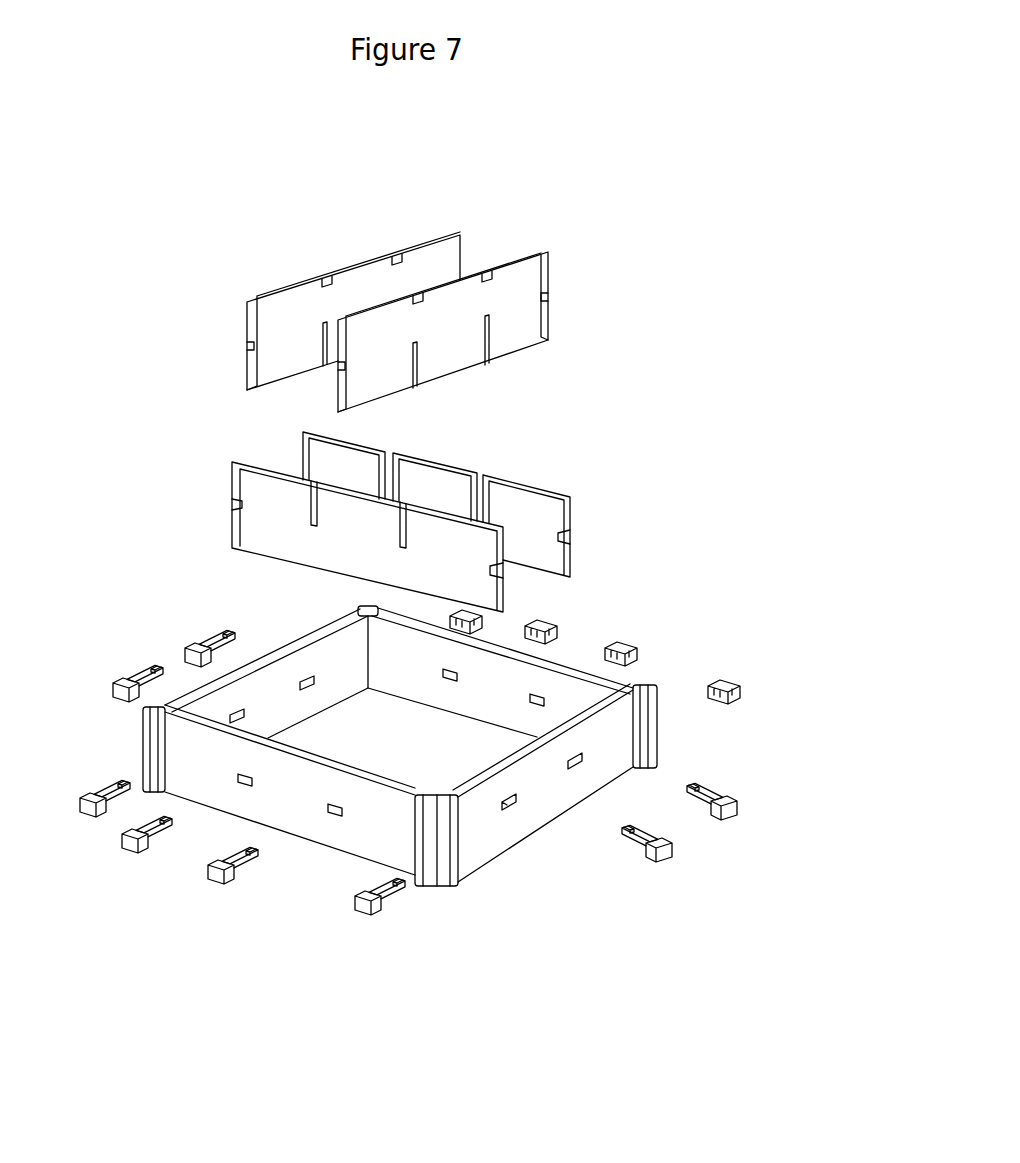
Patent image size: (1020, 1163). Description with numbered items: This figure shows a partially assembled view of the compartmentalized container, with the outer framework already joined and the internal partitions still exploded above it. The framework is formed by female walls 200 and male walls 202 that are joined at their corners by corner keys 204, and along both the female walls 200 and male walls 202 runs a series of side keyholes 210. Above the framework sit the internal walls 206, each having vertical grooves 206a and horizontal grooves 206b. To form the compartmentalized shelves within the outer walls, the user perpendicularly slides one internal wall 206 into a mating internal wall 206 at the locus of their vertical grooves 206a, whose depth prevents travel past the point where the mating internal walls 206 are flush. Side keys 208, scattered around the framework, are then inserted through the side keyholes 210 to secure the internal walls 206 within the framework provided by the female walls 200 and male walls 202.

The female wall 200 is at (467, 798).
The male wall 202 is at (347, 829).
The corner key 204 is at (382, 902).
The internal wall 206 is at (522, 274).
The vertical groove 206a is at (481, 493).
The horizontal groove 206b is at (567, 535).
The side key 208 is at (628, 645).
The side keyhole 210 is at (520, 804).